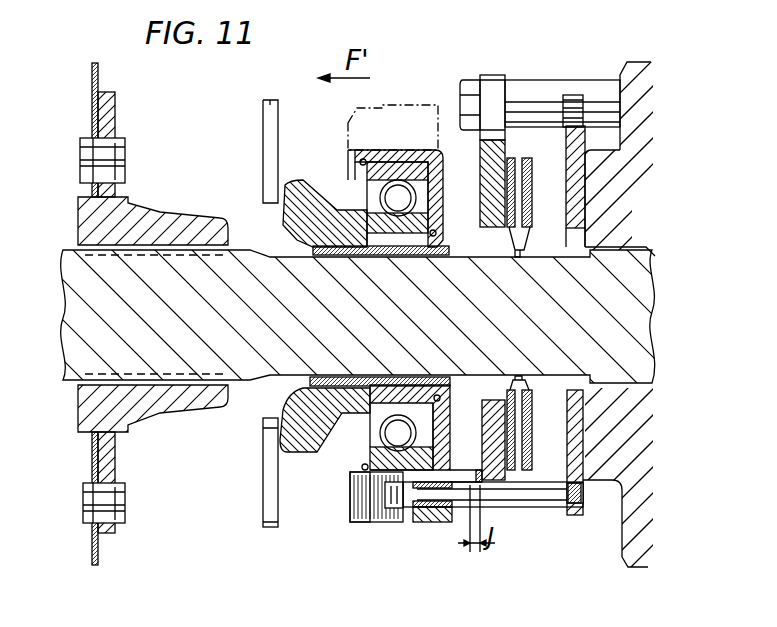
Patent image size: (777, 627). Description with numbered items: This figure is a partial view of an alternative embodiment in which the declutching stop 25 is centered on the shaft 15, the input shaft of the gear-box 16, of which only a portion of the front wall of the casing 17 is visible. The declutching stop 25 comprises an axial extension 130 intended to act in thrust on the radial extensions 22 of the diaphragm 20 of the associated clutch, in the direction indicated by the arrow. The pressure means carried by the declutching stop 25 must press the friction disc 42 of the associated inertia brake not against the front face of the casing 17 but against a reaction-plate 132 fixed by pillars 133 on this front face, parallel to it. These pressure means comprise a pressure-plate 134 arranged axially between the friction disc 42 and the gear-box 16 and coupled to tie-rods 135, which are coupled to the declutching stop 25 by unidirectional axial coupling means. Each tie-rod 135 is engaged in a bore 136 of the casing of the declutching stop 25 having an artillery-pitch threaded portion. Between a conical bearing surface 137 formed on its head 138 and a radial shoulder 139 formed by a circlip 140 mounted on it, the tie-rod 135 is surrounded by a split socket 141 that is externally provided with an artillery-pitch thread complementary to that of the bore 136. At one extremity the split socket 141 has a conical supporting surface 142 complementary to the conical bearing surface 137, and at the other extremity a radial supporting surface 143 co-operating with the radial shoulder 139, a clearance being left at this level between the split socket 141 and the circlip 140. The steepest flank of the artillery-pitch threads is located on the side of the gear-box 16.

The shaft 15 is at (245, 283).
The gear-box 16 is at (612, 544).
The casing 17 is at (619, 572).
The diaphragm 20 is at (256, 117).
The radial extensions 22 is at (270, 143).
The declutching stop 25 is at (418, 150).
The friction disc 42 is at (556, 414).
The axial extension 130 is at (303, 182).
The reaction-plate 132 is at (498, 467).
The pillars 133 is at (533, 93).
The pressure-plate 134 is at (566, 128).
The tie-rods 135 is at (503, 495).
The bore 136 is at (358, 507).
The conical bearing surface 137 is at (413, 513).
The head 138 is at (352, 485).
The radial shoulder 139 is at (478, 478).
The circlip 140 is at (480, 480).
The split socket 141 is at (453, 517).
The conical supporting surface 142 is at (403, 480).
The radial supporting surface 143 is at (470, 518).